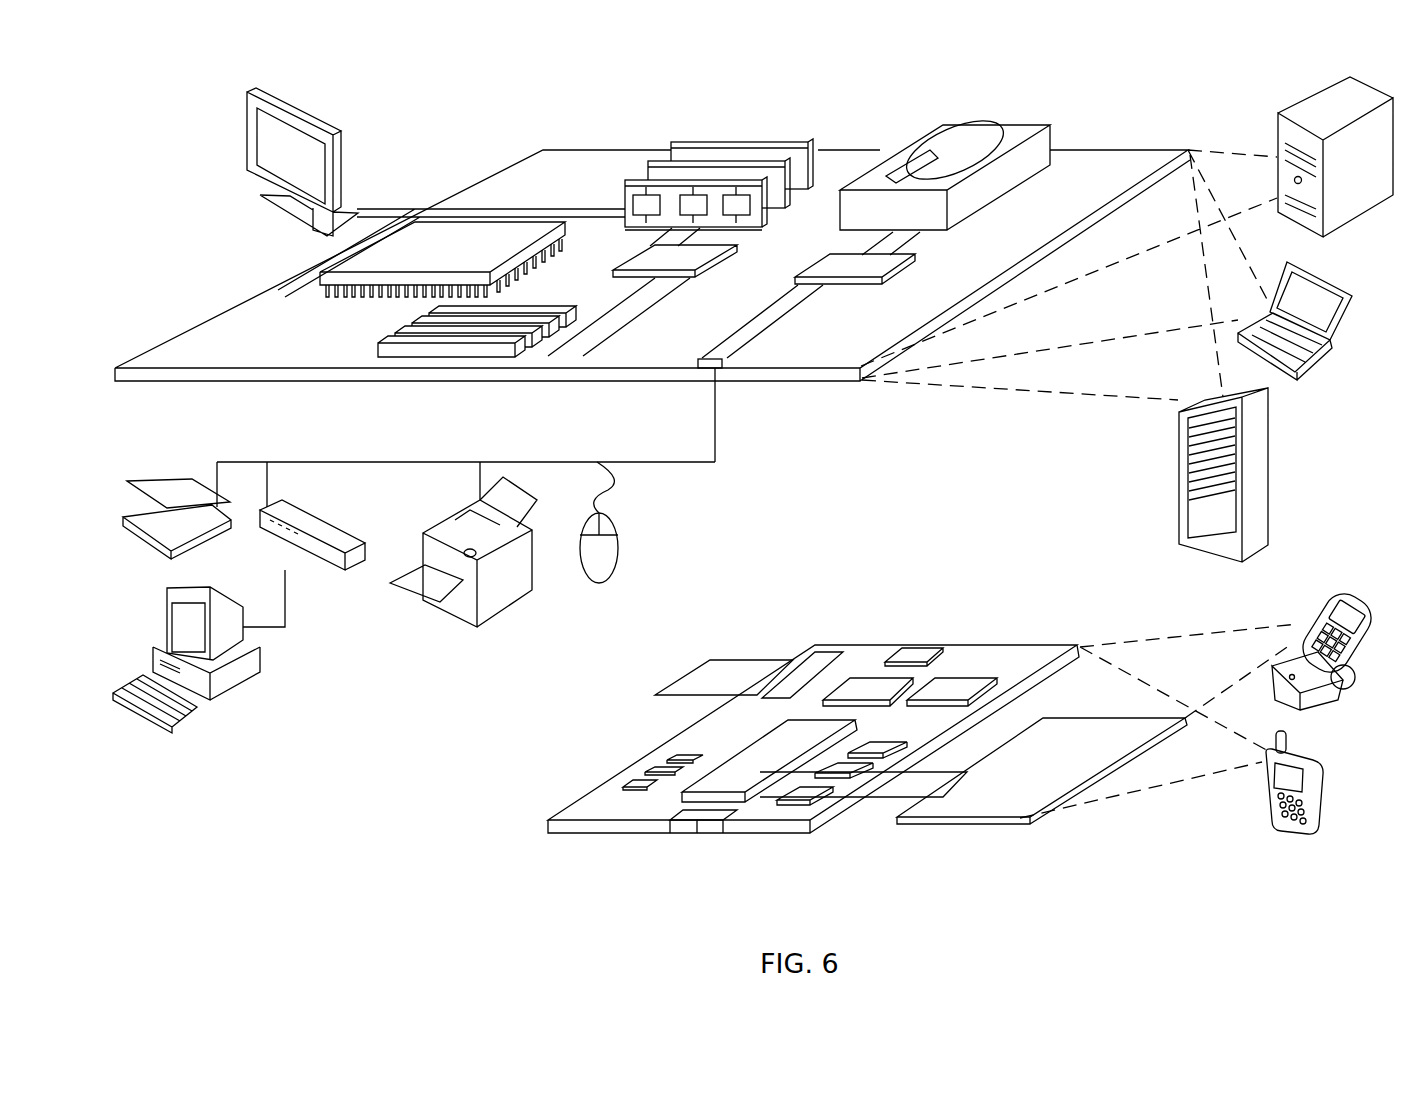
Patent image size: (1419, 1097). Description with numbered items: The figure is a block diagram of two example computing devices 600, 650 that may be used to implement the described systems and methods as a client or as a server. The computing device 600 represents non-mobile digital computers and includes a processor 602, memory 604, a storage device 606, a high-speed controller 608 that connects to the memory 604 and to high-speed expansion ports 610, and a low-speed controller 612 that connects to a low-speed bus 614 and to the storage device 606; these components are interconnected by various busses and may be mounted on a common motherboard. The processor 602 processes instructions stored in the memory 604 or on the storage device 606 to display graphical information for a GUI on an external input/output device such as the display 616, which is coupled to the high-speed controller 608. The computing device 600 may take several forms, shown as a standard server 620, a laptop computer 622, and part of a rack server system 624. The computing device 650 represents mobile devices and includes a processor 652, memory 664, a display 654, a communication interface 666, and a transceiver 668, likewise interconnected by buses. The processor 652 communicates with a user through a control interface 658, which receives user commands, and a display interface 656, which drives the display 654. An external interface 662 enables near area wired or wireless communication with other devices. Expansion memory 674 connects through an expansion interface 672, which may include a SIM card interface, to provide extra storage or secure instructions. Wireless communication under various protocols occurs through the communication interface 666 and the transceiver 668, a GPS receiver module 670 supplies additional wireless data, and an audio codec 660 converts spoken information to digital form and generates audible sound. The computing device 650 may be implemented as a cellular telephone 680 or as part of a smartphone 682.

The computing device 600 is at (150, 112).
The processor 602 is at (328, 276).
The memory 604 is at (693, 160).
The storage device 606 is at (940, 132).
The high-speed controller 608 is at (650, 262).
The high-speed expansion ports 610 is at (398, 340).
The low-speed controller 612 is at (838, 270).
The low-speed bus 614 is at (725, 370).
The display 616 is at (250, 94).
The standard server 620 is at (1279, 134).
The laptop computer 622 is at (1346, 294).
The rack server system 624 is at (1178, 504).
The computing device 650 is at (522, 828).
The processor 652 is at (737, 786).
The display 654 is at (997, 804).
The display interface 656 is at (812, 797).
The control interface 658 is at (848, 772).
The audio codec 660 is at (876, 750).
The external interface 662 is at (700, 821).
The memory 664 is at (663, 779).
The communication interface 666 is at (871, 686).
The transceiver 668 is at (953, 687).
The GPS receiver module 670 is at (925, 650).
The expansion interface 672 is at (793, 660).
The expansion memory 674 is at (718, 660).
The cellular telephone 680 is at (1327, 598).
The smartphone 682 is at (1266, 787).